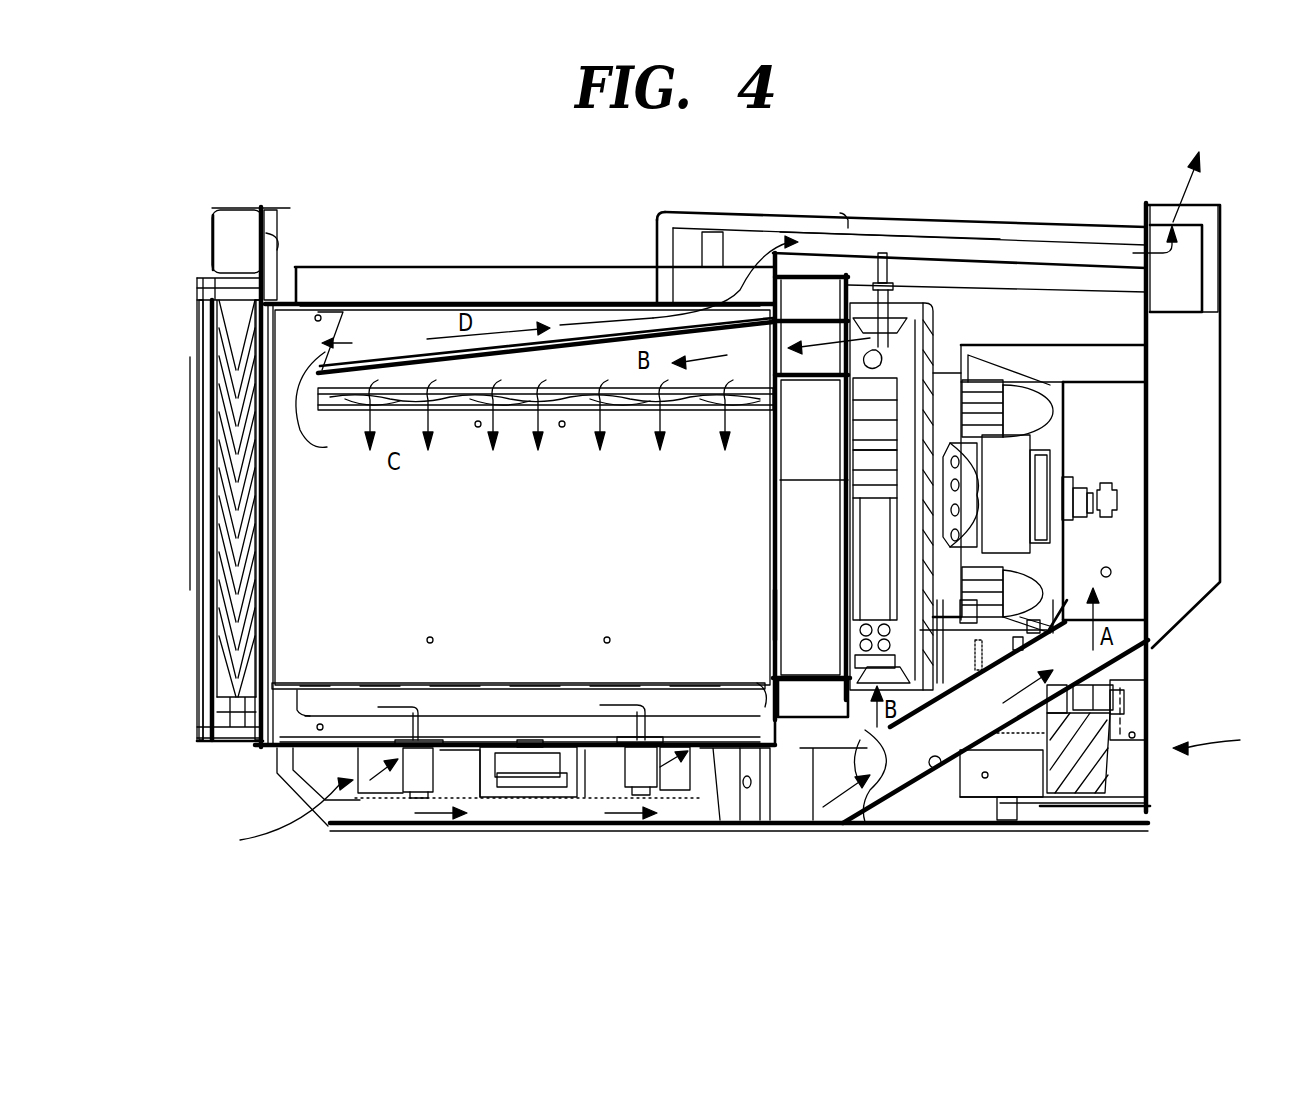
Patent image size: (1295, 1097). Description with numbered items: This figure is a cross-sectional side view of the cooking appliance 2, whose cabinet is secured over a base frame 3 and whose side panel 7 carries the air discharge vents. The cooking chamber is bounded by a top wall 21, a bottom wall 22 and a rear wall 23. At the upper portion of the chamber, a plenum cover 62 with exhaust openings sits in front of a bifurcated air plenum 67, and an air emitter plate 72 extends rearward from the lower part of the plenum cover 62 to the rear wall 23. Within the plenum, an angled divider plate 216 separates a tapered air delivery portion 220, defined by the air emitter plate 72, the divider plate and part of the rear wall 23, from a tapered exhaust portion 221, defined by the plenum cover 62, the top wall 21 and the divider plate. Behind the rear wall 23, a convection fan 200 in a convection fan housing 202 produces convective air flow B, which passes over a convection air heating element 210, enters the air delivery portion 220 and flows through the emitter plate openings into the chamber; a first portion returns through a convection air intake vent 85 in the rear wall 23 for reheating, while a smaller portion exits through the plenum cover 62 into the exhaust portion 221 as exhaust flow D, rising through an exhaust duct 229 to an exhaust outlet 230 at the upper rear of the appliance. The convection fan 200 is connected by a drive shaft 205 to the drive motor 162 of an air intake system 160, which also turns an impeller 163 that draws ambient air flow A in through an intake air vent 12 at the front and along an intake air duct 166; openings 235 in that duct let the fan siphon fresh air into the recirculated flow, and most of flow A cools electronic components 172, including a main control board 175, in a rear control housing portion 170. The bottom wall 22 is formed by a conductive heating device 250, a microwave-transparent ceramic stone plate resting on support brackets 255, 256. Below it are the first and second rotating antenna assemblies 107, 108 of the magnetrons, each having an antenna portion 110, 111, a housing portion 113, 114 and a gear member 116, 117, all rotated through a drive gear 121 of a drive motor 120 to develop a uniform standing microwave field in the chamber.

The cooking appliance 2 is at (225, 145).
The top wall 21 is at (180, 514).
The plenum cover 62 is at (206, 520).
The bifurcated air plenum 67 is at (534, 274).
The tapered exhaust portion 221 is at (530, 265).
The angled divider plate 216 is at (546, 288).
The tapered air delivery portion 220 is at (622, 263).
The exhaust duct 229 is at (880, 206).
The convection fan housing 202 is at (997, 223).
The air intake system 160 is at (1026, 395).
The convection fan 200 is at (920, 351).
The convection air heating element 210 is at (820, 515).
The convection air intake vent 85 is at (814, 510).
The drive shaft 205 is at (855, 566).
The impeller 163 is at (1031, 468).
The drive motor 162 is at (1038, 494).
The exhaust outlet 230 is at (1208, 236).
The rear wall 23 is at (736, 615).
The air emitter plate 72 is at (545, 459).
The bottom wall 22 is at (313, 670).
The antenna portion 110 is at (402, 689).
The conductive heating device 250 is at (522, 500).
The antenna portion 111 is at (620, 695).
The second rotating antenna assembly 108 is at (696, 714).
The support bracket 255 is at (440, 792).
The intake air vent 12 is at (287, 787).
The first rotating antenna assembly 107 is at (308, 811).
The gear member 116 is at (382, 825).
The housing portion 113 is at (460, 810).
The drive gear 121 is at (530, 806).
The drive motor 120 is at (528, 822).
The housing portion 114 is at (588, 839).
The gear member 117 is at (650, 810).
The support bracket 256 is at (753, 824).
The openings 235 is at (886, 800).
The intake air duct 166 is at (962, 815).
The electronic components 172 is at (1061, 815).
The side panel 7 is at (1073, 849).
The base frame 3 is at (1130, 826).
The main control board 175 is at (1170, 691).
The rear control housing portion 170 is at (1213, 731).